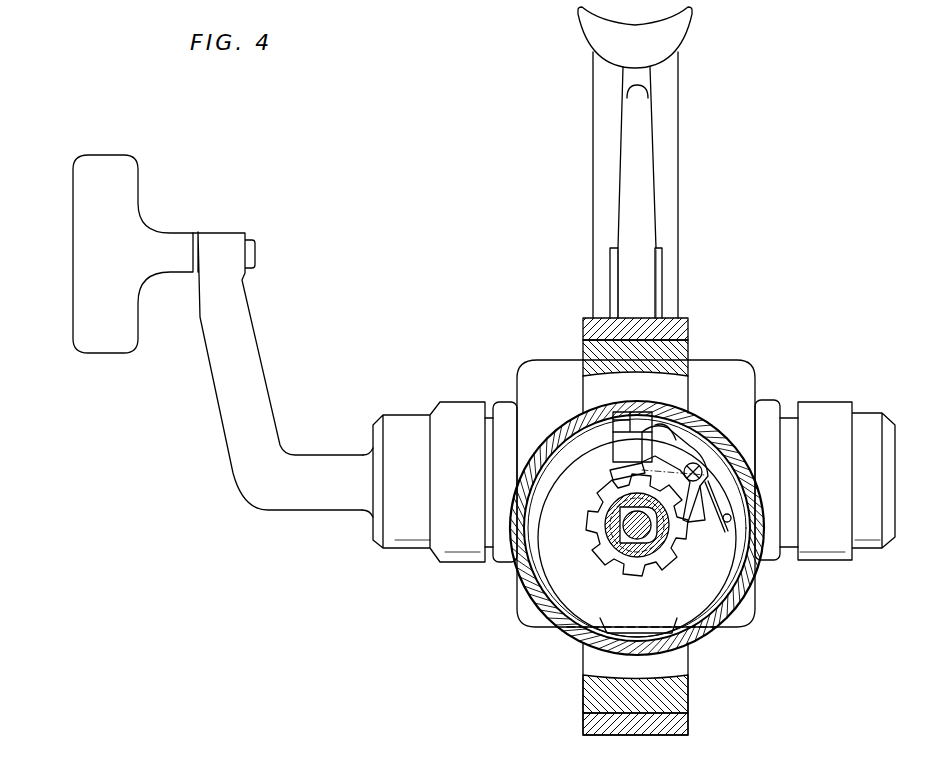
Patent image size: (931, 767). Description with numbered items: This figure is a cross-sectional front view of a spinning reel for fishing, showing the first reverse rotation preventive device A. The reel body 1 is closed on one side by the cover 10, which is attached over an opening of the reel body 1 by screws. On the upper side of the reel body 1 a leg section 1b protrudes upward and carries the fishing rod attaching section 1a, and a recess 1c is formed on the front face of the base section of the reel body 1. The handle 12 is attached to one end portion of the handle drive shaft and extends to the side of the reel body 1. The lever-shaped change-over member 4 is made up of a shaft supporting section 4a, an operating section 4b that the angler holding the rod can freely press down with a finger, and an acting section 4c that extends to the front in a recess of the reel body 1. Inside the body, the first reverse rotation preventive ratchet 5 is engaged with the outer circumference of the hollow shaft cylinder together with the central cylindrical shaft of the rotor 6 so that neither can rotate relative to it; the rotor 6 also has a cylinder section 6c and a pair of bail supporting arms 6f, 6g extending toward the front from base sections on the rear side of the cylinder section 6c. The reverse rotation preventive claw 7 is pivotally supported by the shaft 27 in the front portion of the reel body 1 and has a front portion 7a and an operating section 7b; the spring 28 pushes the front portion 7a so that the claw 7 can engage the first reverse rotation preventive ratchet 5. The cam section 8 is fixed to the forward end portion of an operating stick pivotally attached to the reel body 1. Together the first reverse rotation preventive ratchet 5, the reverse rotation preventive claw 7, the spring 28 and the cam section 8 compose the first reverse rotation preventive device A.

The reel body 1 is at (512, 371).
The fishing rod attaching section 1a is at (688, 22).
The leg section 1b is at (678, 128).
The recess 1c is at (652, 246).
The lever-shaped change-over member 4 is at (657, 183).
The shaft supporting section 4a is at (643, 282).
The operating section 4b is at (650, 78).
The acting section 4c is at (612, 430).
The first reverse rotation preventive ratchet 5 is at (584, 554).
The rotor 6 is at (526, 609).
The cylinder section 6c is at (518, 400).
The bail supporting arm 6f is at (688, 348).
The bail supporting arm 6g is at (688, 695).
The reverse rotation preventive claw 7 is at (718, 462).
The front portion 7a is at (690, 522).
The operating section 7b is at (596, 476).
The cam section 8 is at (672, 431).
The cover 10 is at (745, 362).
The handle 12 is at (213, 402).
The shaft 27 is at (703, 466).
The spring 28 is at (728, 522).
The first reverse rotation preventive device A is at (612, 447).